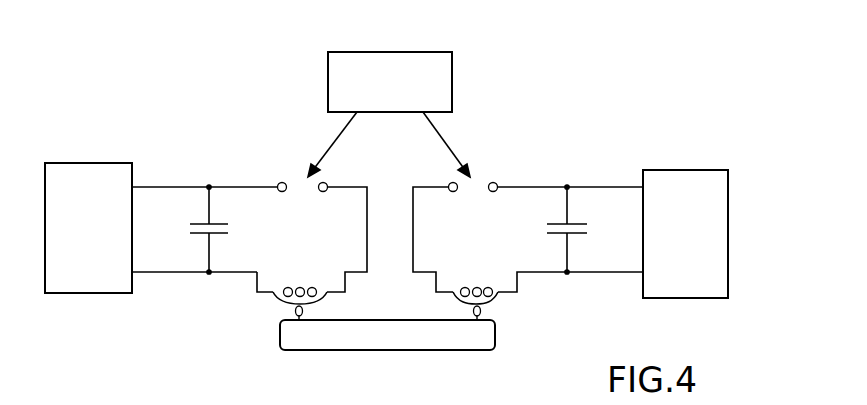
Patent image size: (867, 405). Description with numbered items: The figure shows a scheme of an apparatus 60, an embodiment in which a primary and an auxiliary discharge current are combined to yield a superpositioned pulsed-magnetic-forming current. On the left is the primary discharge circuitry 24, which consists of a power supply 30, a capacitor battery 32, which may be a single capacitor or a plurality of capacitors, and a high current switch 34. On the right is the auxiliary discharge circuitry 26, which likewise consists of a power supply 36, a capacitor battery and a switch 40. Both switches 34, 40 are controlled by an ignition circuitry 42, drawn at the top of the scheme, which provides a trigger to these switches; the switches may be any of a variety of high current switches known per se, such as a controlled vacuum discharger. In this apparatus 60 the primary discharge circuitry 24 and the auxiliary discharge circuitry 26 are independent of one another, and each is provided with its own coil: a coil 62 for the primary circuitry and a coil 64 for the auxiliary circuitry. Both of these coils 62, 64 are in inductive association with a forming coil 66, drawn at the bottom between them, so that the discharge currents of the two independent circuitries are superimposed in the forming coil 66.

The primary discharge circuitry 24 is at (253, 250).
The auxiliary discharge circuitry 26 is at (493, 242).
The power supply 30 is at (92, 167).
The capacitor battery 32 is at (188, 228).
The high current switch 34 is at (302, 188).
The power supply 36 is at (728, 203).
The switch 40 is at (475, 187).
The ignition circuitry 42 is at (452, 88).
The apparatus 60 is at (602, 103).
The coil 62 is at (285, 302).
The coil 64 is at (490, 302).
The forming coil 66 is at (400, 352).